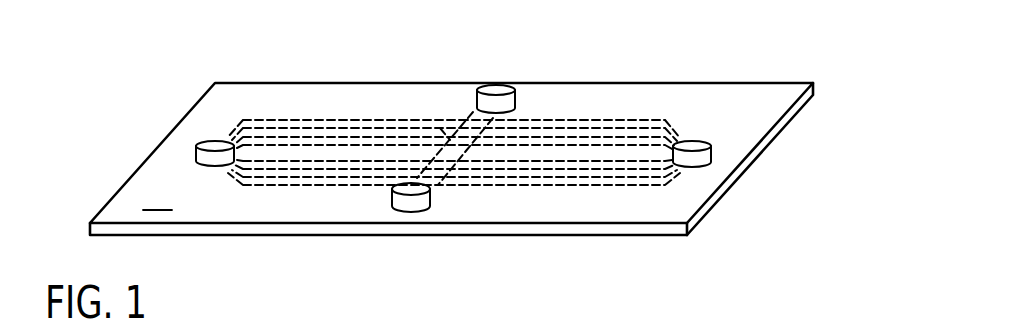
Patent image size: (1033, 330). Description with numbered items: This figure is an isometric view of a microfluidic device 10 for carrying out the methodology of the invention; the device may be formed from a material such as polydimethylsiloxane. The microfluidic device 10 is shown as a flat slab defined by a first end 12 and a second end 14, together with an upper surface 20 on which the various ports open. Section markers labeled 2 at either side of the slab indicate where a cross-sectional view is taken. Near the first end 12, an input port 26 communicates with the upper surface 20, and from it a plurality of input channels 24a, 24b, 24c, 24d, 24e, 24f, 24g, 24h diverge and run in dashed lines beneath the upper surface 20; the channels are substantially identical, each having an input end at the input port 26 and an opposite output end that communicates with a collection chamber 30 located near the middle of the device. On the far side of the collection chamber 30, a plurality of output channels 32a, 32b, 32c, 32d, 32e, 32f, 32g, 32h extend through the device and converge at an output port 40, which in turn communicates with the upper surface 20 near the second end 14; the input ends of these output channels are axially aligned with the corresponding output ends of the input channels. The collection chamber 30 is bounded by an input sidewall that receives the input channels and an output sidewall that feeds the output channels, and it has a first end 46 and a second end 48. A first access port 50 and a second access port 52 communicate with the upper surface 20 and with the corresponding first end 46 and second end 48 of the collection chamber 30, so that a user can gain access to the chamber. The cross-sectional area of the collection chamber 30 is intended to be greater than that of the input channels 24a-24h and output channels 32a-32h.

The microfluidic device 10 is at (451, 173).
The first end 12 is at (188, 115).
The second end 14 is at (712, 207).
The upper surface 20 is at (157, 199).
The section line 2- 2 is at (143, 152).
The input port 26 is at (215, 141).
The output port 40 is at (711, 157).
The first access port 50 is at (411, 182).
The second access port 52 is at (495, 86).
The first end of collection chamber 46 is at (432, 197).
The second end of collection chamber 48 is at (462, 115).
The collection chamber 30 is at (446, 133).
The input channel 24a is at (352, 187).
The input channel 24b is at (324, 187).
The input channel 24c is at (283, 187).
The input channel 24d is at (253, 187).
The input channel 24e is at (266, 119).
The input channel 24f is at (300, 127).
The input channel 24g is at (352, 136).
The input channel 24h is at (396, 144).
The output channel 32a is at (513, 187).
The output channel 32b is at (568, 187).
The output channel 32c is at (612, 187).
The output channel 32d is at (653, 187).
The output channel 32e is at (540, 119).
The output channel 32f is at (570, 127).
The output channel 32g is at (618, 136).
The output channel 32h is at (676, 121).